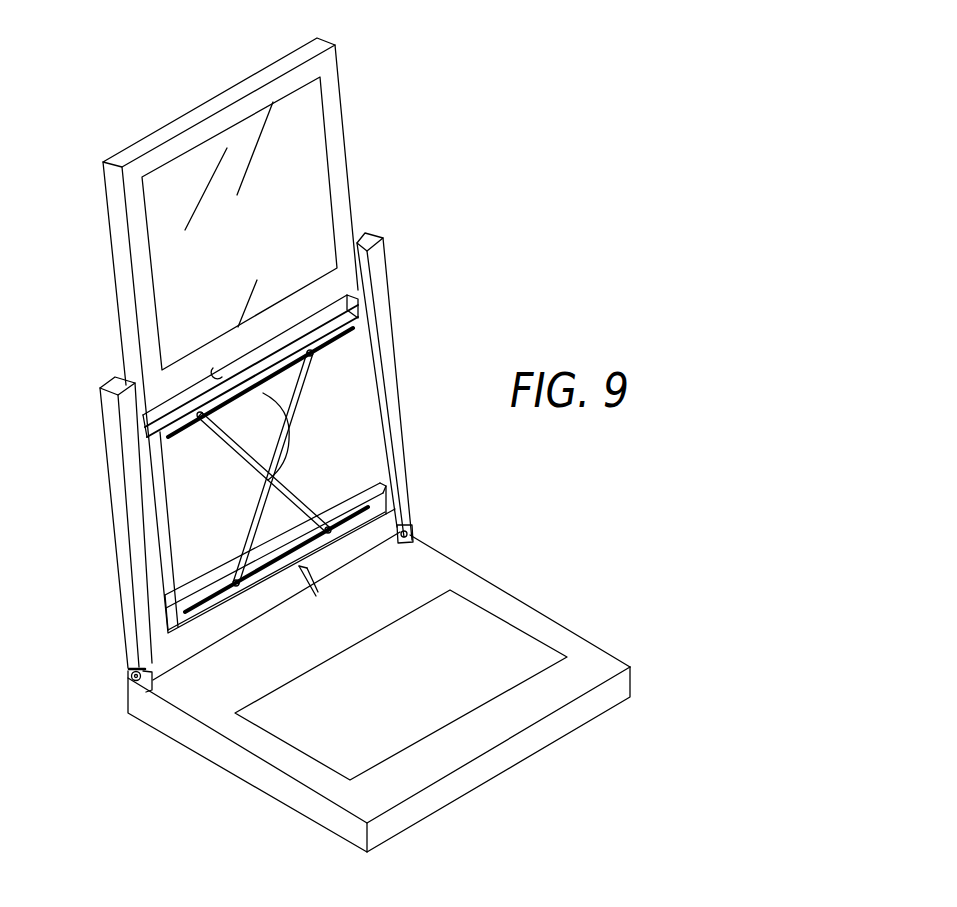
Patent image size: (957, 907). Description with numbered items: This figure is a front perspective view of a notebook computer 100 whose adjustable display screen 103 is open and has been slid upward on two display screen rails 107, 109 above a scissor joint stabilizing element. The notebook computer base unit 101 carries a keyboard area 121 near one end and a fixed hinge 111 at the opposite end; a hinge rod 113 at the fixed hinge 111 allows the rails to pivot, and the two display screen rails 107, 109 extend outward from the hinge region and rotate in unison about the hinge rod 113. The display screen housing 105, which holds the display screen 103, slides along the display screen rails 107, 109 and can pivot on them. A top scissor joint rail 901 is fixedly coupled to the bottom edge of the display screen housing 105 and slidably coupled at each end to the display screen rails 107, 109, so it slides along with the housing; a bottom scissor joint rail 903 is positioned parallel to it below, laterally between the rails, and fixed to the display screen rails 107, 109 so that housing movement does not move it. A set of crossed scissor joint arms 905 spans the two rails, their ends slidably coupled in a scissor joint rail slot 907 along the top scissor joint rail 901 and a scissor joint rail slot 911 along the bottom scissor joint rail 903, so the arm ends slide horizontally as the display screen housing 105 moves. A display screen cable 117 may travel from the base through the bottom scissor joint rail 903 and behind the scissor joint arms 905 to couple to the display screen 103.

The notebook computer 100 is at (559, 214).
The notebook computer base unit 101 is at (597, 670).
The display screen 103 is at (293, 190).
The display screen housing 105 is at (330, 70).
The display screen rail 107 is at (373, 278).
The display screen rail 109 is at (132, 447).
The fixed hinge 111 is at (412, 532).
The hinge rod 113 is at (130, 676).
The display screen cable 117 is at (292, 465).
The keyboard area 121 is at (517, 653).
The top scissor joint rail 901 is at (177, 441).
The bottom scissor joint rail 903 is at (186, 588).
The set of crossed scissor joint arms 905 is at (380, 470).
The scissor joint rail slot 907 is at (375, 383).
The scissor joint rail slot 911 is at (206, 604).